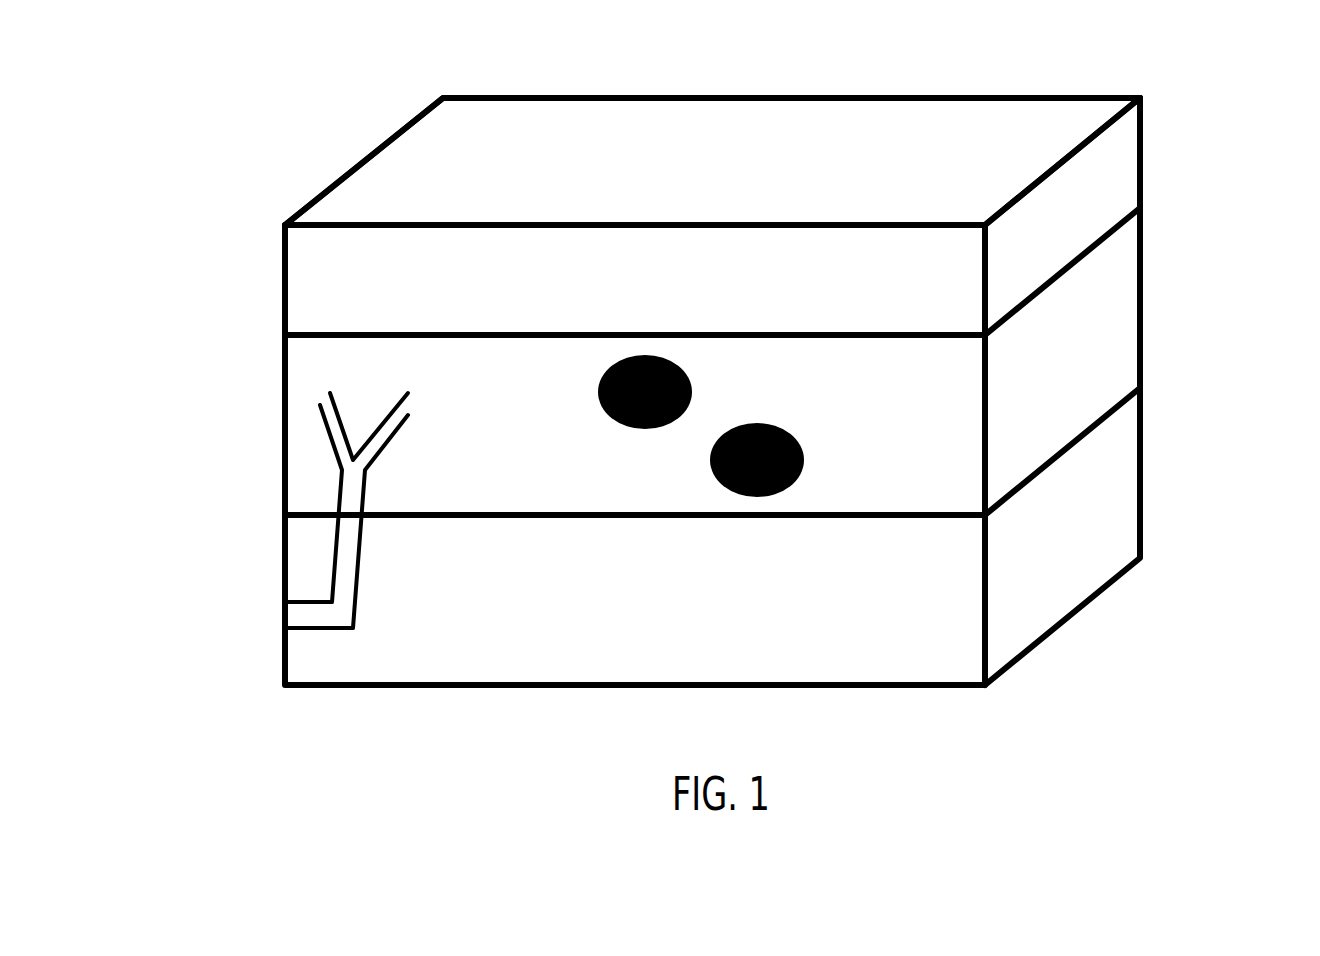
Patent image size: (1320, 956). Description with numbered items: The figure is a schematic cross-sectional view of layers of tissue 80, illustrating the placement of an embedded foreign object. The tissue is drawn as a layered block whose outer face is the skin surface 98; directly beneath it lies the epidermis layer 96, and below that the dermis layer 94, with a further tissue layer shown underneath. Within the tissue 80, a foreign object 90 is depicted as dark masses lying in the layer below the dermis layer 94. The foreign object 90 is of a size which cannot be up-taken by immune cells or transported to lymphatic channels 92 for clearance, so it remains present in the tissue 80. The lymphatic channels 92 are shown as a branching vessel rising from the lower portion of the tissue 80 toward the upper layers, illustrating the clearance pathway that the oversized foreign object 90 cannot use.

The layers of tissue 80 is at (248, 156).
The skin surface 98 is at (455, 133).
The epidermis layer 96 is at (1163, 100).
The dermis layer 94 is at (1185, 212).
The foreign object 90 is at (690, 392).
The lymphatic channels 92 is at (325, 436).